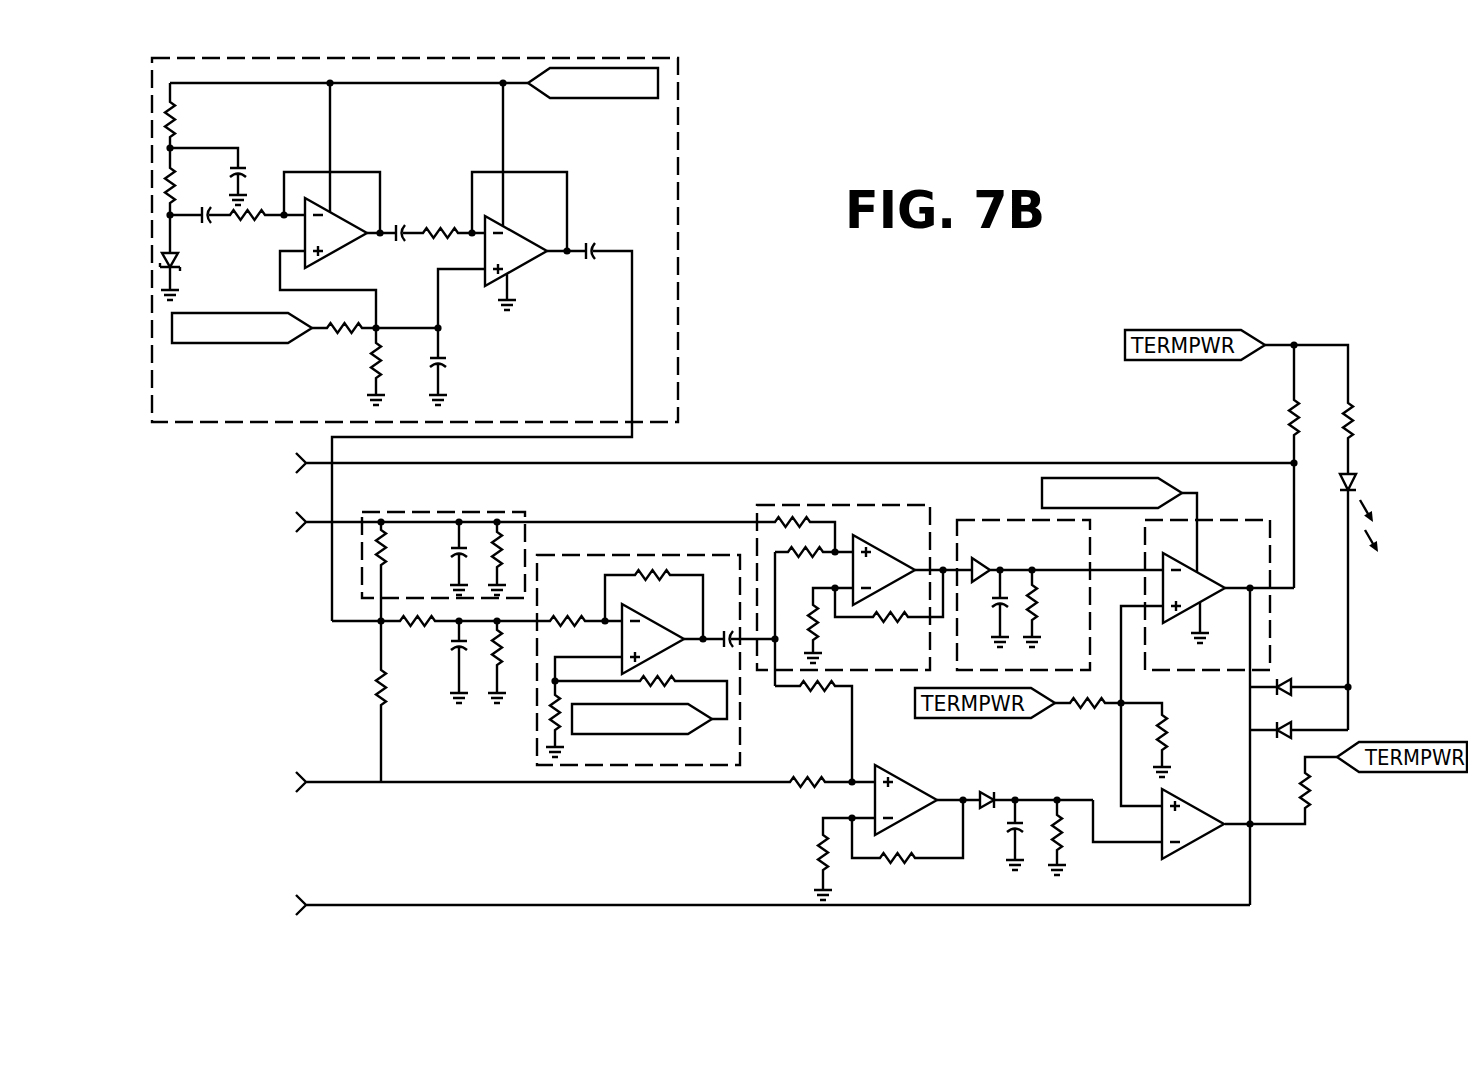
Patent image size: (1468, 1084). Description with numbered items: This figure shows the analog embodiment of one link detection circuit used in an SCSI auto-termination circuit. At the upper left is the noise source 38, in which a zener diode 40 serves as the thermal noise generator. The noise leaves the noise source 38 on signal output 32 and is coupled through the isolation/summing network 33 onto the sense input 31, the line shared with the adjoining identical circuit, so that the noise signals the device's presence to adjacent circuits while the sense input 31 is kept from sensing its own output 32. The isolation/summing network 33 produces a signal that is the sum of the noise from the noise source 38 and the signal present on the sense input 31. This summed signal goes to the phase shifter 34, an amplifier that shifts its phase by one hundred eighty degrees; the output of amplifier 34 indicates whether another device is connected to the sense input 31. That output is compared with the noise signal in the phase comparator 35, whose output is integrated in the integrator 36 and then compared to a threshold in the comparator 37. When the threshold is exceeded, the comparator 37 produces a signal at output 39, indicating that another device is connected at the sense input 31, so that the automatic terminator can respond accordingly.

The noise source 38 is at (449, 240).
The zener diode 40 is at (179, 261).
The signal output 32 is at (633, 262).
The output 39 is at (307, 461).
The sense input 31 is at (310, 530).
The isolation/summing network 33 is at (529, 540).
The phase shifter 34 is at (651, 556).
The phase comparator 35 is at (779, 504).
The integrator 36 is at (1009, 516).
The comparator 37 is at (1222, 520).